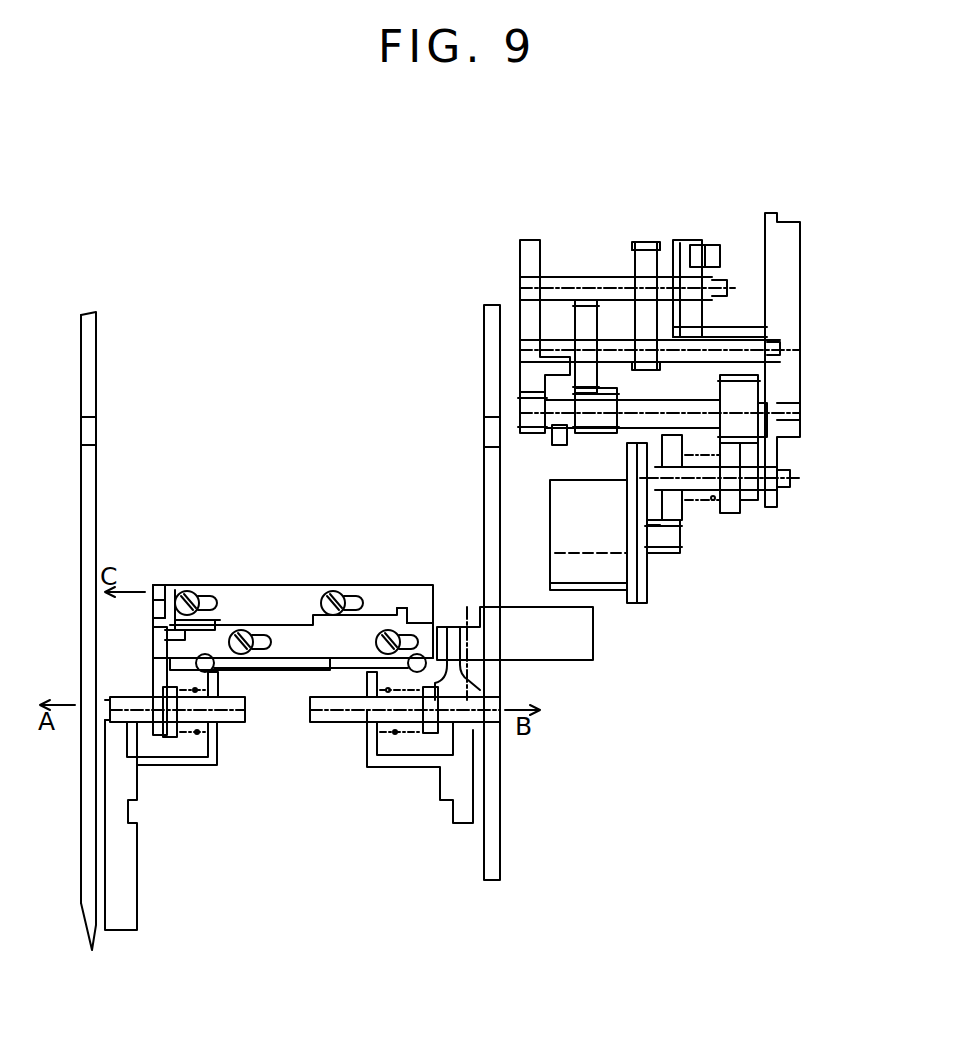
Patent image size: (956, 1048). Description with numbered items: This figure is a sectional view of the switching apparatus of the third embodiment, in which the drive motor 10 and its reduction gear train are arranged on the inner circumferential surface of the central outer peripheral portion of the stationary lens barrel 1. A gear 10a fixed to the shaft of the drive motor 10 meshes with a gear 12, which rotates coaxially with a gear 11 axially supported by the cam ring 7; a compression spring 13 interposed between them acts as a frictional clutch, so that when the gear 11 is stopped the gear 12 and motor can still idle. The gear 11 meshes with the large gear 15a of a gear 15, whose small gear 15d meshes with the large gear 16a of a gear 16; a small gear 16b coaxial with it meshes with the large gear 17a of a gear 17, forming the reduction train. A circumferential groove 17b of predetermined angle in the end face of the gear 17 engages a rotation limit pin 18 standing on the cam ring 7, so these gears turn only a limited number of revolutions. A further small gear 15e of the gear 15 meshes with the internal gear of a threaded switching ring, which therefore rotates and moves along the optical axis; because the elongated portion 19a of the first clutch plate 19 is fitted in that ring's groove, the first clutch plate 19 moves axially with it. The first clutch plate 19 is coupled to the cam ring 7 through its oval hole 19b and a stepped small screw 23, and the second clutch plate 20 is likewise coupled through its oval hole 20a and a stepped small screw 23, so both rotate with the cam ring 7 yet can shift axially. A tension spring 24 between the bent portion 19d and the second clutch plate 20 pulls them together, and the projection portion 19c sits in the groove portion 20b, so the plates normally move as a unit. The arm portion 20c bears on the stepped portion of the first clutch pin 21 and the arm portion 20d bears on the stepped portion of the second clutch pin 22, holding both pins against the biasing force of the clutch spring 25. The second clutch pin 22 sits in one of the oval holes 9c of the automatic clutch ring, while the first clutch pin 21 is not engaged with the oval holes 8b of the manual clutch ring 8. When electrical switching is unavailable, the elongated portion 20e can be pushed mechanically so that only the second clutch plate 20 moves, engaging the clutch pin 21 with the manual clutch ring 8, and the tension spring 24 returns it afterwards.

The stationary lens barrel 1 is at (527, 245).
The cam ring 7 is at (120, 860).
The manual clutch ring 8 is at (86, 478).
The oval holes 8b is at (95, 432).
The oval holes 9c is at (490, 432).
The drive motor 10 is at (560, 530).
The gear 10a is at (672, 560).
The gear 11 is at (745, 480).
The gear 12 is at (675, 527).
The compression spring 13 is at (712, 498).
The gear 15 is at (740, 395).
The large gear 15a is at (760, 430).
The small gear 15d is at (590, 430).
The small gear 15e is at (525, 395).
The gear 16 is at (583, 340).
The large gear 16a is at (583, 300).
The small gear 16b is at (648, 372).
The gear 17 is at (645, 290).
The large gear 17a is at (648, 245).
The circumferential groove 17b is at (690, 240).
The rotation limit pin 18 is at (705, 253).
The first clutch plate 19 is at (185, 590).
The elongated portion 19a is at (160, 590).
The oval hole 19b is at (218, 600).
The projection portion 19c is at (160, 610).
The bent portion 19d is at (410, 625).
The second clutch plate 20 is at (300, 650).
The oval hole 20a is at (400, 628).
The groove portion 20b is at (185, 635).
The arm portion 20c is at (158, 665).
The arm portion 20d is at (497, 688).
The elongated portion 20e is at (588, 653).
The first clutch pin 21 is at (245, 735).
The second clutch pin 22 is at (347, 722).
The stepped small screw 23 is at (200, 595).
The tension spring 24 is at (362, 650).
The clutch spring 25 is at (200, 735).